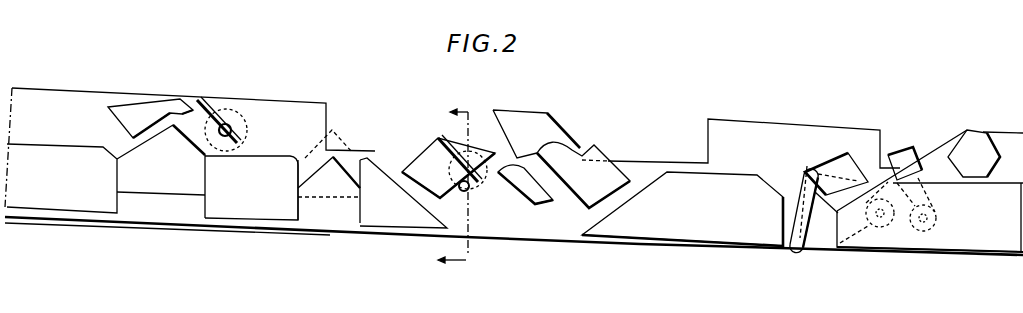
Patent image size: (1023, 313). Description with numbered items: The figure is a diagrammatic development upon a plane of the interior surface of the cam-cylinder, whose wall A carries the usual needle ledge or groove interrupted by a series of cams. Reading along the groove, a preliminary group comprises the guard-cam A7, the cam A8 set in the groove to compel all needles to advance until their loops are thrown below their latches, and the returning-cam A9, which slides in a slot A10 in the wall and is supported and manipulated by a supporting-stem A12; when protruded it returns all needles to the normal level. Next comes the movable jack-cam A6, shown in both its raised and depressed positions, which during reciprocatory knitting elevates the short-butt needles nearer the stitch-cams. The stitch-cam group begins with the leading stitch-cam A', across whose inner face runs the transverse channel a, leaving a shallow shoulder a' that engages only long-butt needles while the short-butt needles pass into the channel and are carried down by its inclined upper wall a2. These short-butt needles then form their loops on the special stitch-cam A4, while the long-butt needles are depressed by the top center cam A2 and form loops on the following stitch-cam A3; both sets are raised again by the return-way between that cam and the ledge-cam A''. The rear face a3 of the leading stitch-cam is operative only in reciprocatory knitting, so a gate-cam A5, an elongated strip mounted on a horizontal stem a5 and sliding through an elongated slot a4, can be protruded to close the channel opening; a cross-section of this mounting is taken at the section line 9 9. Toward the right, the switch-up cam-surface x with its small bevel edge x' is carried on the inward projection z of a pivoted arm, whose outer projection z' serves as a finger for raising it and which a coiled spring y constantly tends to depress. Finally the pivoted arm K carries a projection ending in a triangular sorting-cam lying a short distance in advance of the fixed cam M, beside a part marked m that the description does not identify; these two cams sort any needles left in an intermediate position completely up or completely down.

The cam-cylinder wall A is at (802, 133).
The leading stitch-cam A' is at (460, 149).
The ledge-cam A'' is at (682, 209).
The top center cam A2 is at (536, 134).
The following stitch-cam A3 is at (583, 175).
The special stitch-cam A4 is at (533, 207).
The gate-cam A5 is at (482, 187).
The jack-cam A6 is at (312, 190).
The guard-cam A7 is at (140, 100).
The advancing cam A8 is at (148, 170).
The returning-cam A9 is at (207, 105).
The slot A10 is at (200, 99).
The supporting-stem A12 is at (248, 128).
The transverse channel a is at (448, 168).
The shoulder cam-surface a' is at (395, 153).
The inclined upper channel-wall a2 is at (430, 148).
The rear face of leading stitch-cam a3 is at (463, 193).
The elongated slot a4 is at (527, 164).
The horizontal stem a5 is at (458, 174).
The cam-surface x is at (791, 211).
The bevel edge x' is at (798, 194).
The coiled spring y is at (826, 202).
The inward projection z is at (793, 266).
The outer projection z' is at (836, 174).
The block m is at (908, 150).
The fixed cam M is at (980, 135).
The arm K is at (936, 207).
The section line 9 is at (457, 187).